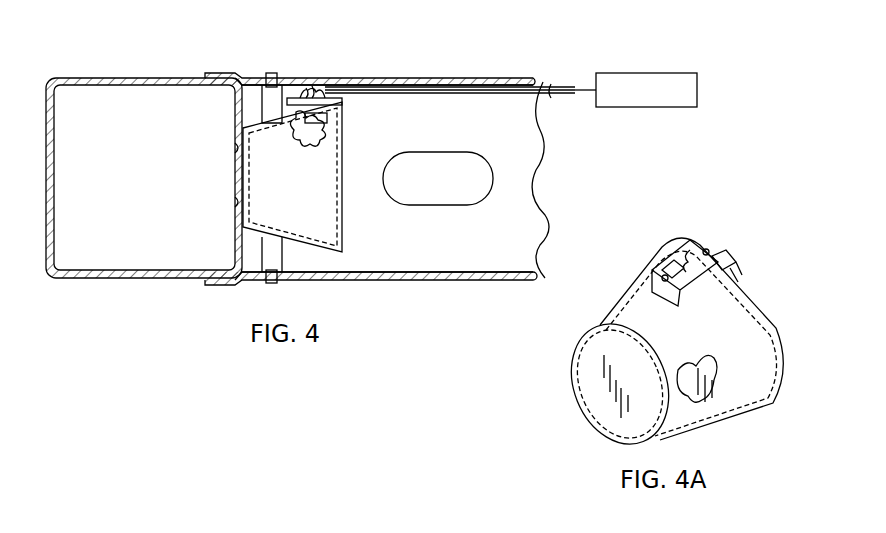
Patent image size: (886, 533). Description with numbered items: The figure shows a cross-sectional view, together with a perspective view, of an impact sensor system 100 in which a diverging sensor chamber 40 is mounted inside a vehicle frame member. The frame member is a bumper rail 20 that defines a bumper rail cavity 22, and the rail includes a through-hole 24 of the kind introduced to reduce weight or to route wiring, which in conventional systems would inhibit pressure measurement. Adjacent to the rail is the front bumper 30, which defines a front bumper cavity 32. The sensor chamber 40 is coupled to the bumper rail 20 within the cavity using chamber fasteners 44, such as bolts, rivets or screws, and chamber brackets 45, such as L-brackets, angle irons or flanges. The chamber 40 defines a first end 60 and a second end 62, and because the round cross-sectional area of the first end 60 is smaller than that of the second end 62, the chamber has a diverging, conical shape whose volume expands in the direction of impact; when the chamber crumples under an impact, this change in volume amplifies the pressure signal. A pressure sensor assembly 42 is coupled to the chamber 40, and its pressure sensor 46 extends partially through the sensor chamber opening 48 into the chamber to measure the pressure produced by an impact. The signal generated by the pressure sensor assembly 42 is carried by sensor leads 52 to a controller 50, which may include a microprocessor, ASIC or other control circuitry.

In FIG. 4, the impact sensor system 100 is at (397, 56).
In FIG. 4, the bumper rail 20 is at (512, 72).
In FIG. 4, the bumper rail cavity 22 is at (517, 228).
In FIG. 4, the through-hole 24 is at (478, 175).
In FIG. 4, the front bumper 30 is at (153, 72).
In FIG. 4, the front bumper cavity 32 is at (92, 102).
In FIG. 4, the sensor chamber 40 is at (291, 175).
In FIG. 4A, the sensor chamber 40 is at (674, 320).
In FIG. 4, the pressure sensor assembly 42 is at (312, 95).
In FIG. 4A, the pressure sensor assembly 42 is at (692, 246).
In FIG. 4, the chamber fastener 44 is at (277, 82).
In FIG. 4, the chamber bracket 45 is at (260, 102).
In FIG. 4, the pressure sensor 46 is at (320, 130).
In FIG. 4, the sensor chamber opening 48 is at (332, 118).
In FIG. 4, the controller 50 is at (683, 73).
In FIG. 4, the sensor lead 52 is at (550, 92).
In FIG. 4A, the sensor lead 52 is at (730, 266).
In FIG. 4, the first end 60 is at (245, 173).
In FIG. 4A, the first end 60 is at (602, 398).
In FIG. 4, the second end 62 is at (332, 170).
In FIG. 4A, the second end 62 is at (705, 400).